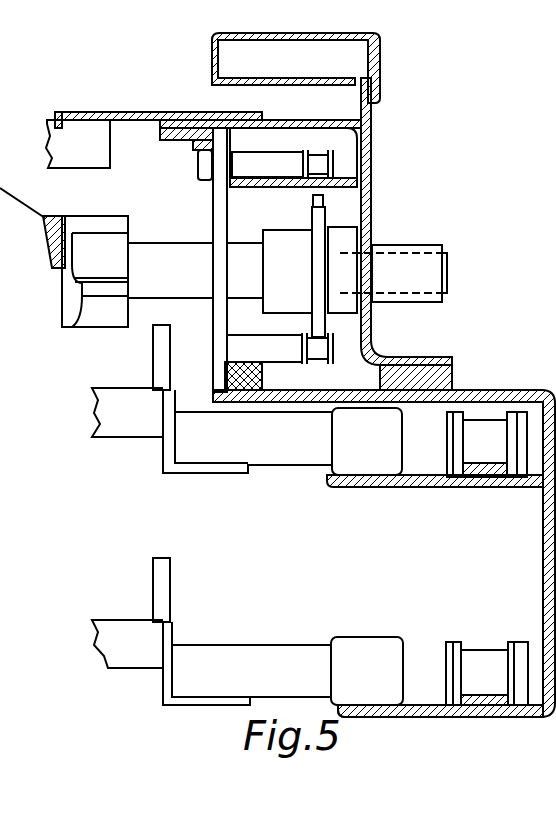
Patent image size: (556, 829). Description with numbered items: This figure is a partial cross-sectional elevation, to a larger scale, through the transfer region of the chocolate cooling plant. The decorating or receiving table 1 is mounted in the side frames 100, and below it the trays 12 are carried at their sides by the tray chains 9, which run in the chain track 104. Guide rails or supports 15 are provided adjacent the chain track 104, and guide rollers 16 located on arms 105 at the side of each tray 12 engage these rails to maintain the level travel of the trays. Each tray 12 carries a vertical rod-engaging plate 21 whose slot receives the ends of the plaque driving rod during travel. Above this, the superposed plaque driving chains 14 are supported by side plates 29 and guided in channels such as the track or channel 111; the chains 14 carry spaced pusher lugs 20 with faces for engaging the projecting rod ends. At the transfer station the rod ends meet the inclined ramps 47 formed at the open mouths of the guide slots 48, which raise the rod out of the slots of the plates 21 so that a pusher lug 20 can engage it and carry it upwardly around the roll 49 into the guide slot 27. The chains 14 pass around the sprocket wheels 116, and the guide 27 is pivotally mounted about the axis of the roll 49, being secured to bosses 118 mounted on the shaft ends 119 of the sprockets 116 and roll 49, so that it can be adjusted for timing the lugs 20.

The decorating or receiving table 1 is at (92, 118).
The tray chains 9 is at (487, 438).
The tray 12 is at (120, 398).
The plaque driving chains 14 is at (318, 162).
The guide rails or supports 15 is at (445, 482).
The guide rollers 16 is at (363, 467).
The pusher lug 20 is at (268, 163).
The rod-engaging plate 21 is at (162, 366).
The guide slot 27 is at (250, 184).
The side plate 29 is at (372, 193).
The ramp 47 is at (240, 380).
The guide slot 48 is at (215, 312).
The roll 49 is at (100, 222).
The side frame 100 is at (532, 400).
The chain track 104 is at (488, 466).
The arm 105 is at (203, 458).
The supporting and guiding track or channel 111 is at (240, 80).
The sprocket wheel 116 is at (318, 313).
The boss 118 is at (345, 302).
The shaft end 119 is at (342, 250).